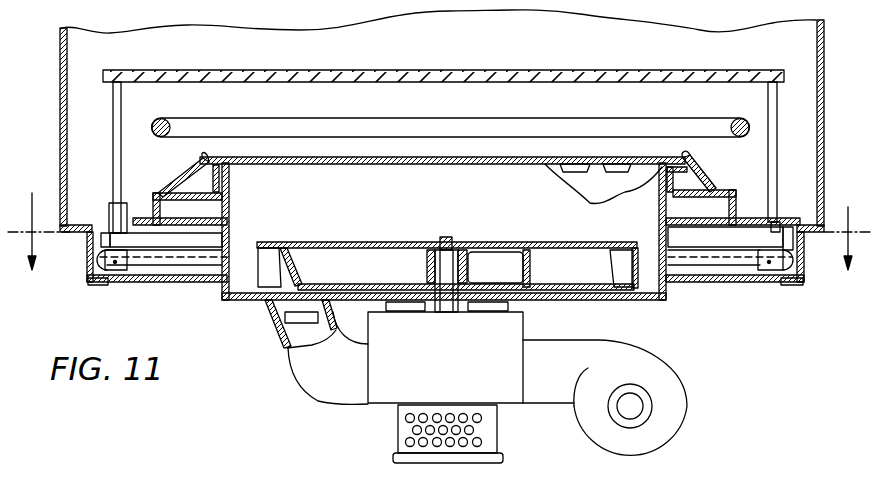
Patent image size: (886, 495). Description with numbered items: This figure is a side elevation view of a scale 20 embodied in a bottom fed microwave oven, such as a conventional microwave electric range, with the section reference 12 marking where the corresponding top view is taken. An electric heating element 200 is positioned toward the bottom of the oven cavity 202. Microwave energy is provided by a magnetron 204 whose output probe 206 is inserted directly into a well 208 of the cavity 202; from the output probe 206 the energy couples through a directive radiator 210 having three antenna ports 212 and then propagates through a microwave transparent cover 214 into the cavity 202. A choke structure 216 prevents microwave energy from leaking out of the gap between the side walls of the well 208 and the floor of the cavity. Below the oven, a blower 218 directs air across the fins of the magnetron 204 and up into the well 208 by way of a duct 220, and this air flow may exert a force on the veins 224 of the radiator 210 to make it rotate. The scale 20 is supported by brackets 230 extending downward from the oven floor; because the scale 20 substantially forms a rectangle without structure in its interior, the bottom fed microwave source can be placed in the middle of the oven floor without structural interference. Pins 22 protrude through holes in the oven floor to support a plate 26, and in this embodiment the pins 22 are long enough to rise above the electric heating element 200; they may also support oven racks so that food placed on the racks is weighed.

The cavity 202 is at (630, 48).
The plate 26 is at (707, 69).
The pins 22 is at (774, 157).
The electric heating element 200 is at (563, 117).
The well 208 is at (395, 199).
The choke structure 216 is at (682, 195).
The microwave transparent cover 214 is at (476, 164).
The antenna ports 212 is at (316, 241).
The veins 224 is at (257, 267).
The directive radiator 210 is at (391, 238).
The output probe 206 is at (466, 286).
The scale 20 is at (719, 264).
The brackets 230 is at (97, 283).
The section line 12 is at (440, 219).
The magnetron 204 is at (524, 329).
The blower 218 is at (675, 370).
The duct 220 is at (296, 373).